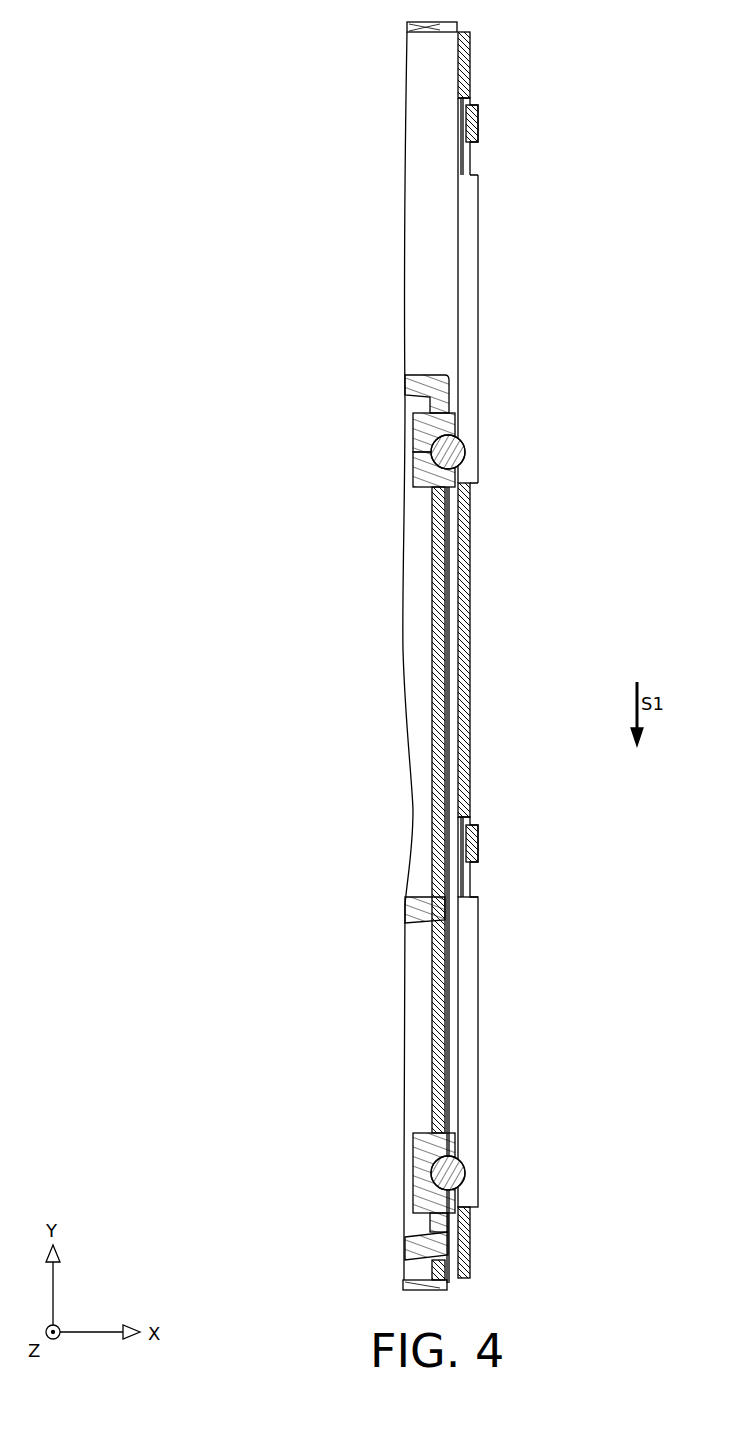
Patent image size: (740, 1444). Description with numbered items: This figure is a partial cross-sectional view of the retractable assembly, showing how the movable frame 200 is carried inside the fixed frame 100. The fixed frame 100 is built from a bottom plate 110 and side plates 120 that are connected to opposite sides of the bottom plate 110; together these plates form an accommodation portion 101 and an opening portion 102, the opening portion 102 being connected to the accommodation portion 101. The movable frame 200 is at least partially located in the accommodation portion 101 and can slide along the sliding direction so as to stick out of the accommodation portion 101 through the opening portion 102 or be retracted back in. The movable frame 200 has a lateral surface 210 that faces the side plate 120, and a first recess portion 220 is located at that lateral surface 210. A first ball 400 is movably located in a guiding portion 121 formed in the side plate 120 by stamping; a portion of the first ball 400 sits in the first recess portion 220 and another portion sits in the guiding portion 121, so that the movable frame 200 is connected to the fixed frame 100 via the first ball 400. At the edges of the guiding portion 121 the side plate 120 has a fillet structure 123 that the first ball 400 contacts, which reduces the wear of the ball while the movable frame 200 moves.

The fixed frame 100 is at (482, 62).
The accommodation portion 101 is at (430, 75).
The opening portion 102 is at (447, 1283).
The bottom plate 110 is at (423, 128).
The side plate 120 is at (462, 157).
The guiding portion 121 is at (471, 318).
The fillet structure 123 is at (471, 243).
The movable frame 200 is at (440, 692).
The lateral surface 210 is at (456, 418).
The first recess portion 220 is at (443, 470).
The first ball 400 is at (466, 452).